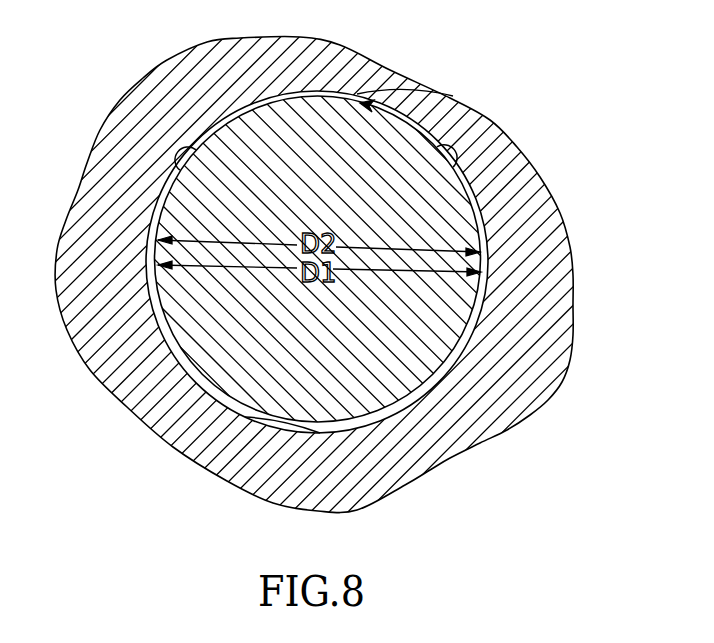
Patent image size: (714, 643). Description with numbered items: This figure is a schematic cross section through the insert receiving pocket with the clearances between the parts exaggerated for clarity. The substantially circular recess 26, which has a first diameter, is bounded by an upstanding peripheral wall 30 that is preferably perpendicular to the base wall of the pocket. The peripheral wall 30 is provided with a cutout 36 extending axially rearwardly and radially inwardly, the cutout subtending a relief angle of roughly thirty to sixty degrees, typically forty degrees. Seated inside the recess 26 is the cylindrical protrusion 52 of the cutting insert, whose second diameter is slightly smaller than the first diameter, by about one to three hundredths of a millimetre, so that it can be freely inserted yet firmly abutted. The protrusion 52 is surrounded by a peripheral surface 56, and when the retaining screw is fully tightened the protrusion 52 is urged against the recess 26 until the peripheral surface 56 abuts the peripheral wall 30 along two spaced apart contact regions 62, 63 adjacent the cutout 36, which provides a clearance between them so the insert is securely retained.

The recess 26 is at (444, 370).
The upstanding peripheral wall 30 is at (215, 460).
The cutout 36 is at (453, 96).
The cylindrical protrusion 52 is at (428, 312).
The peripheral surface 56 is at (125, 410).
The contact region 62 is at (448, 174).
The contact region 63 is at (178, 168).